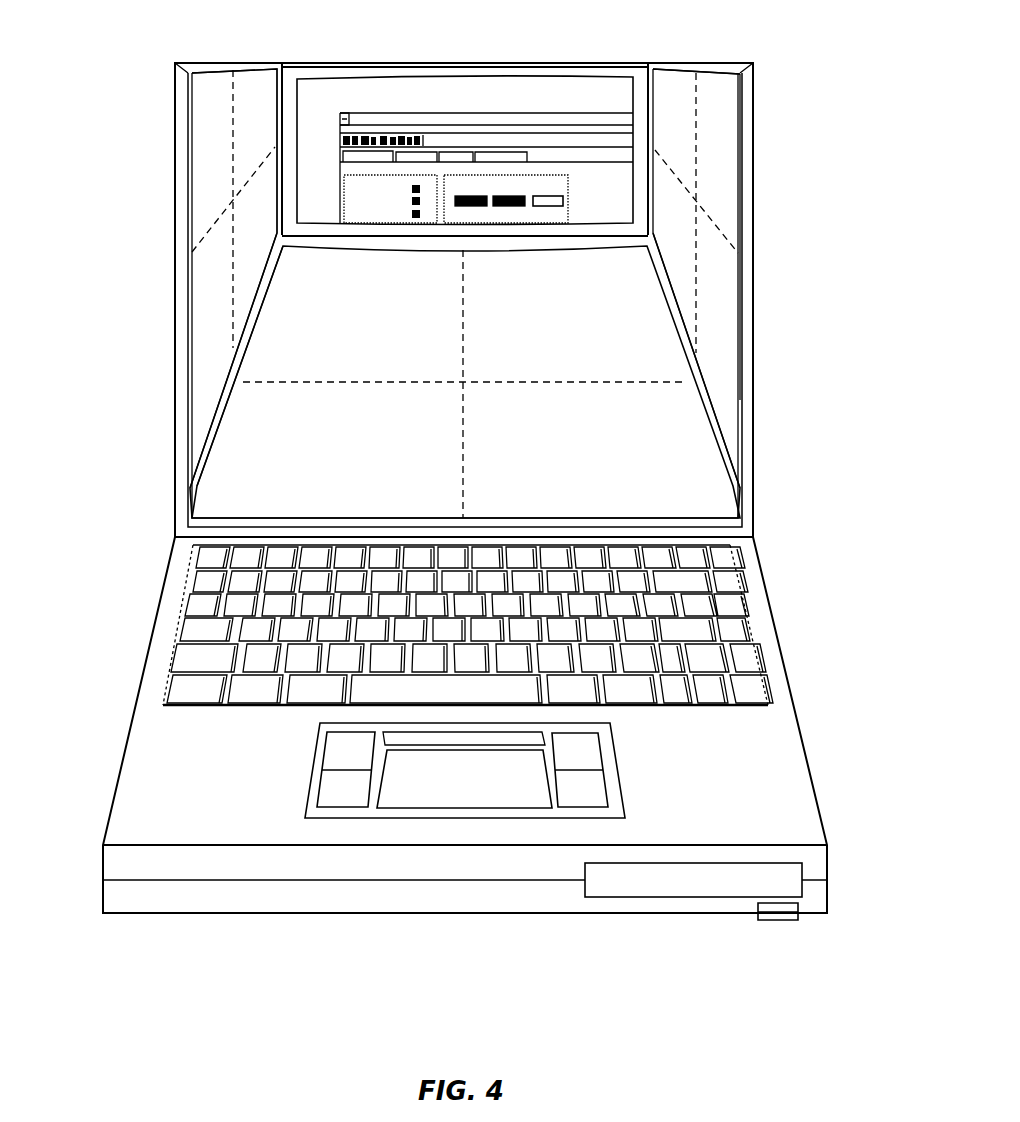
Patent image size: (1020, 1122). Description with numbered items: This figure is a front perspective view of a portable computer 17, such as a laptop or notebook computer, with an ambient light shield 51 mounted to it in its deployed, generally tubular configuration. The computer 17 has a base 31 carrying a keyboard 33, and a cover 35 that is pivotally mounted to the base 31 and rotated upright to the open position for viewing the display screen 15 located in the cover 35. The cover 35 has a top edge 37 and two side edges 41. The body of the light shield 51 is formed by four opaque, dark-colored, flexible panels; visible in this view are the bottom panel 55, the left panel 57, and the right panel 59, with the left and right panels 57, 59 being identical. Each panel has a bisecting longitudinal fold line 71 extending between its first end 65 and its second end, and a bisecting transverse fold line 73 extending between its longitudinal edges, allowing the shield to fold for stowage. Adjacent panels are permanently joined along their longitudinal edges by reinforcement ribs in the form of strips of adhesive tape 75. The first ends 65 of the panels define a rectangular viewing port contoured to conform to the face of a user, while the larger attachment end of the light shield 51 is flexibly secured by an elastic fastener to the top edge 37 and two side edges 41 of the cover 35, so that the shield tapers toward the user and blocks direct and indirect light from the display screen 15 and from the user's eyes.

The display screen 15 is at (478, 142).
The portable computer 17 is at (817, 606).
The base 31 is at (818, 807).
The keyboard 33 is at (763, 678).
The cover 35 is at (176, 132).
The top edge 37 is at (176, 63).
The side edges 41 is at (175, 270).
The light shield 51 is at (765, 233).
The bottom panel 55 is at (628, 298).
The left panel 57 is at (213, 183).
The right panel 59 is at (717, 183).
The first end 65 is at (583, 73).
The longitudinal fold line 71 is at (212, 228).
The transverse fold line 73 is at (232, 322).
The adhesive tape 75 is at (215, 465).